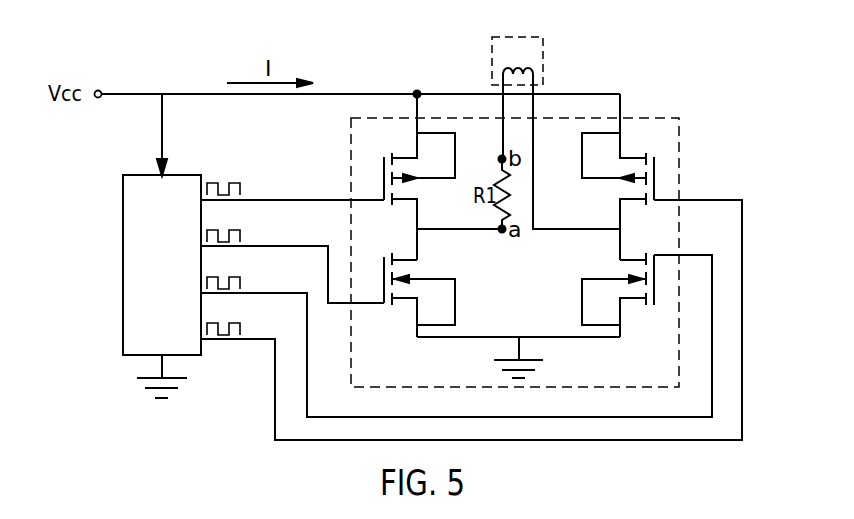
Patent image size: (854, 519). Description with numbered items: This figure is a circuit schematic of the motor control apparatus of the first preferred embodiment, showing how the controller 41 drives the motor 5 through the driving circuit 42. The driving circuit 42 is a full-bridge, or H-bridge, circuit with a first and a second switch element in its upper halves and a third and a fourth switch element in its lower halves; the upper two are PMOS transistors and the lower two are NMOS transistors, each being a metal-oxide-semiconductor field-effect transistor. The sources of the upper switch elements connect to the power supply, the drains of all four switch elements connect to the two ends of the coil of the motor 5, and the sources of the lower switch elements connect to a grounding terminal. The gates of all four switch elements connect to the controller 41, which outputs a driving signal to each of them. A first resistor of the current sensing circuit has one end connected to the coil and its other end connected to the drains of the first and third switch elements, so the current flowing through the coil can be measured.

The motor 5 is at (542, 62).
The controller 41 is at (123, 266).
The driving circuit 42 is at (656, 117).